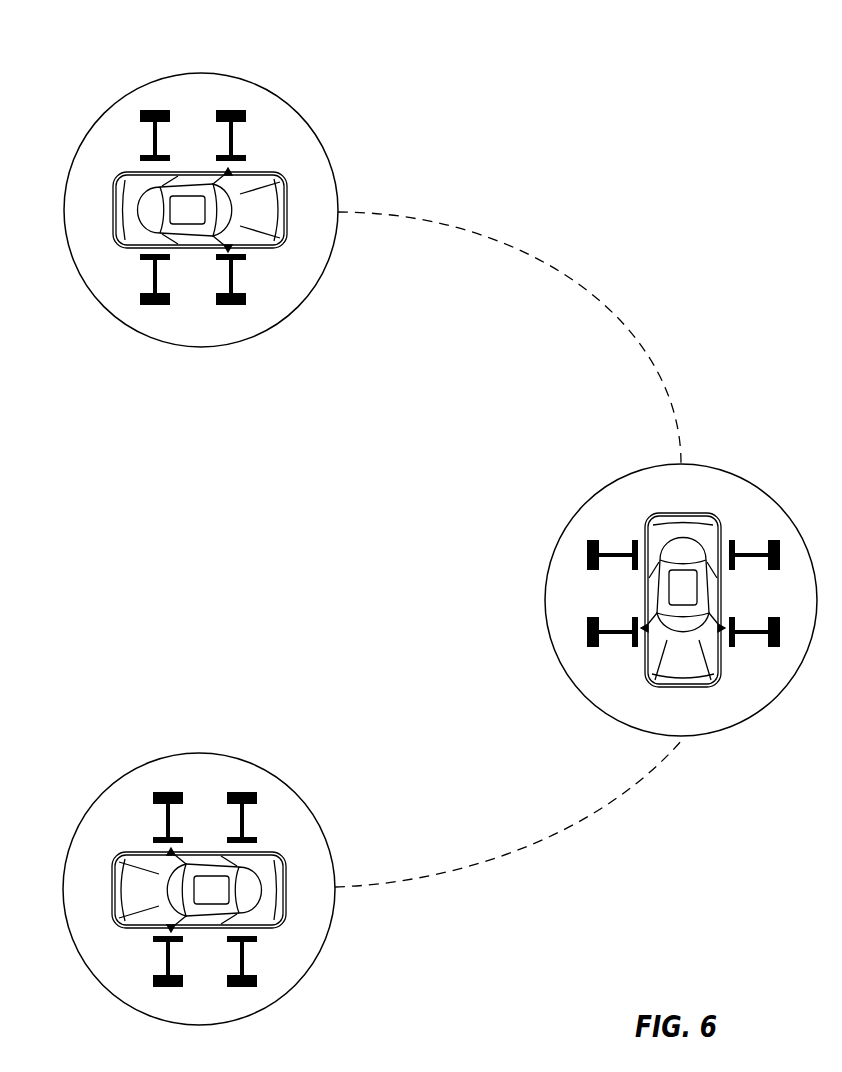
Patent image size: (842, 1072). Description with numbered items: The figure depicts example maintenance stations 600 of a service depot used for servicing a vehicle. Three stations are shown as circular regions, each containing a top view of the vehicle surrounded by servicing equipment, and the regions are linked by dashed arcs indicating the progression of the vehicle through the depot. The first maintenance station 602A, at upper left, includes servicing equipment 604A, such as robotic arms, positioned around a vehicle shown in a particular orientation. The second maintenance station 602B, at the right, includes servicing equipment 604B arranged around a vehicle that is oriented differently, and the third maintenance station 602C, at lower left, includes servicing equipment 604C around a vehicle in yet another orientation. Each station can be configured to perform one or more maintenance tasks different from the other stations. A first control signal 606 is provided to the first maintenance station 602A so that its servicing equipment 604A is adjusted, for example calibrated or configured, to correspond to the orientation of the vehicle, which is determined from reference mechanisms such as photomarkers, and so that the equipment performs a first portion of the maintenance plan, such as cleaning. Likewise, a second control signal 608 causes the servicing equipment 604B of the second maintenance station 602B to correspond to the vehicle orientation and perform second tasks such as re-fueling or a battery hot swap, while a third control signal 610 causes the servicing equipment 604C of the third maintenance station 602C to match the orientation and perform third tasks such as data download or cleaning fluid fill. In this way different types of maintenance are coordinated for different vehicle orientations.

The maintenance stations 600 is at (108, 48).
The first maintenance station 602A is at (260, 332).
The second maintenance station 602B is at (582, 690).
The third maintenance station 602C is at (307, 970).
The servicing equipment 604A is at (153, 273).
The servicing equipment 604B is at (588, 543).
The servicing equipment 604C is at (255, 795).
The first control signal 606 is at (340, 85).
The second control signal 608 is at (780, 435).
The third control signal 610 is at (275, 705).